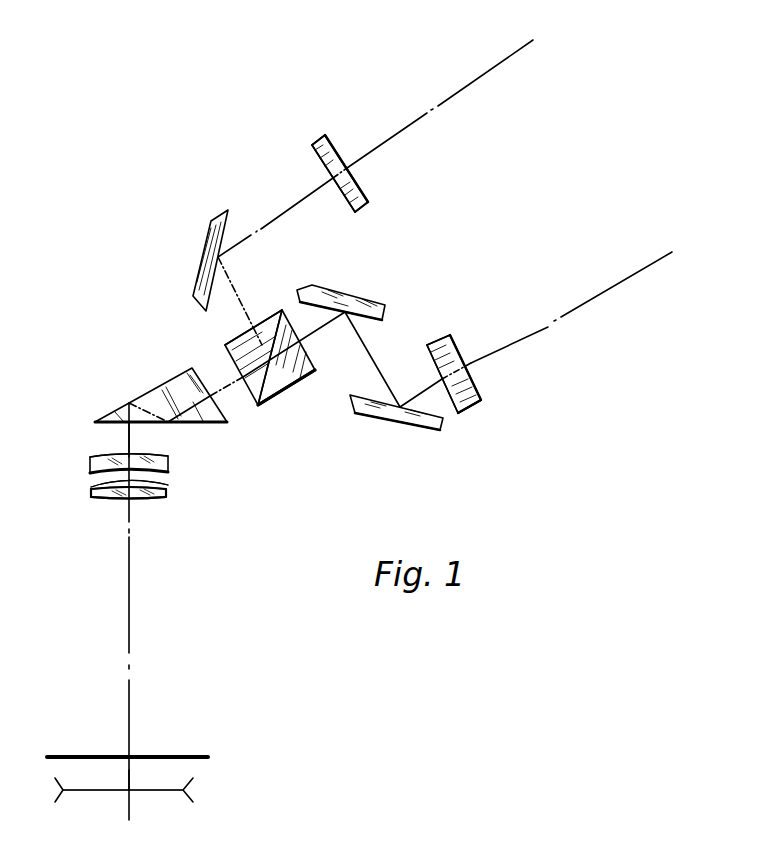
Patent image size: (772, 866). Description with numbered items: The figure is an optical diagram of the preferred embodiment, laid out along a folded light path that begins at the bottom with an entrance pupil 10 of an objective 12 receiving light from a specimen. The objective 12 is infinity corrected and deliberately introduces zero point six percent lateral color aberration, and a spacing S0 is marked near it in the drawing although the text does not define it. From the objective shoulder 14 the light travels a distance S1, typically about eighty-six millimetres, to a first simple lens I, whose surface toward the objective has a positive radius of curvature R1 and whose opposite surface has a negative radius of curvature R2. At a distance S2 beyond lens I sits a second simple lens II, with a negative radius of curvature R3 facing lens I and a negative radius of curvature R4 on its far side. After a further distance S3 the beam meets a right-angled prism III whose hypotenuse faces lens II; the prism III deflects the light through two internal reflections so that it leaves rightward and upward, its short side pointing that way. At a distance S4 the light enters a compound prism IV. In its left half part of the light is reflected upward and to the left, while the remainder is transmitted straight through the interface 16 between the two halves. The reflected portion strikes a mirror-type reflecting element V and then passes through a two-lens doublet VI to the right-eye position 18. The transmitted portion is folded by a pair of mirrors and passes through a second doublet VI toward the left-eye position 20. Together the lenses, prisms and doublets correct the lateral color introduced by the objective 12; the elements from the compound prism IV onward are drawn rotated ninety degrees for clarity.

The entrance pupil 10 is at (165, 790).
The objective 12 is at (238, 795).
The objective shoulder 14 is at (163, 755).
The interface 16 is at (283, 319).
The right eye position 18 is at (497, 62).
The left eye position 20 is at (603, 290).
The lens I is at (166, 493).
The second lens II is at (168, 458).
The prism III is at (218, 422).
The compound prism IV is at (235, 358).
The reflecting element V is at (220, 214).
The doublet VI is at (485, 388).
The object surface S0 is at (129, 778).
The distance S1 is at (130, 596).
The distance S2 is at (91, 489).
The distance S3 is at (138, 432).
The distance S4 is at (233, 378).
The radius of curvature R1 is at (147, 497).
The radius of curvature R2 is at (158, 487).
The radius of curvature R3 is at (91, 485).
The radius of curvature R4 is at (95, 457).